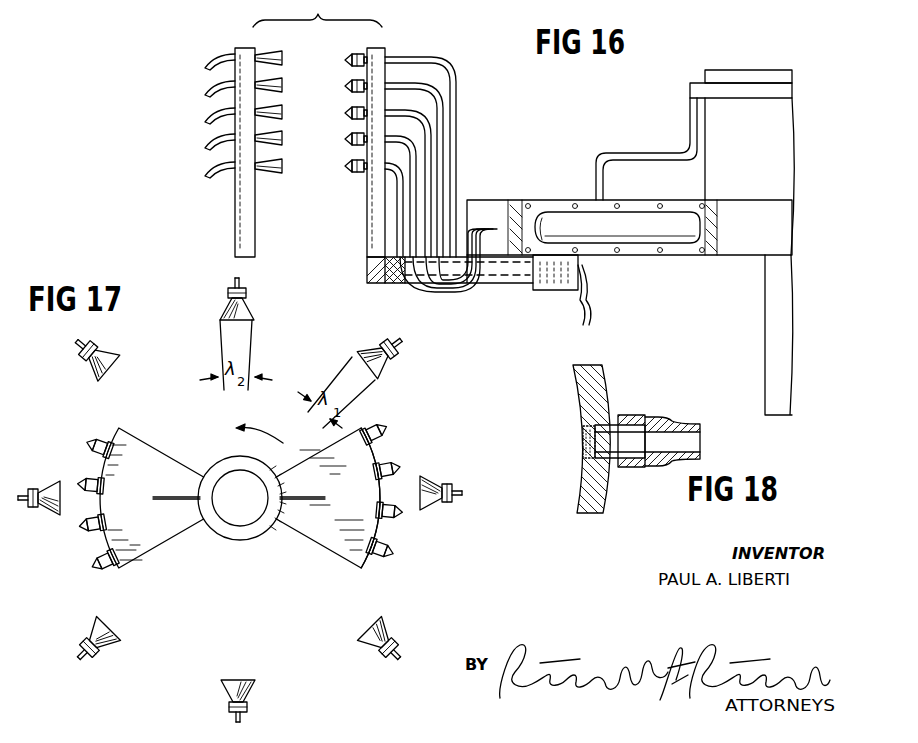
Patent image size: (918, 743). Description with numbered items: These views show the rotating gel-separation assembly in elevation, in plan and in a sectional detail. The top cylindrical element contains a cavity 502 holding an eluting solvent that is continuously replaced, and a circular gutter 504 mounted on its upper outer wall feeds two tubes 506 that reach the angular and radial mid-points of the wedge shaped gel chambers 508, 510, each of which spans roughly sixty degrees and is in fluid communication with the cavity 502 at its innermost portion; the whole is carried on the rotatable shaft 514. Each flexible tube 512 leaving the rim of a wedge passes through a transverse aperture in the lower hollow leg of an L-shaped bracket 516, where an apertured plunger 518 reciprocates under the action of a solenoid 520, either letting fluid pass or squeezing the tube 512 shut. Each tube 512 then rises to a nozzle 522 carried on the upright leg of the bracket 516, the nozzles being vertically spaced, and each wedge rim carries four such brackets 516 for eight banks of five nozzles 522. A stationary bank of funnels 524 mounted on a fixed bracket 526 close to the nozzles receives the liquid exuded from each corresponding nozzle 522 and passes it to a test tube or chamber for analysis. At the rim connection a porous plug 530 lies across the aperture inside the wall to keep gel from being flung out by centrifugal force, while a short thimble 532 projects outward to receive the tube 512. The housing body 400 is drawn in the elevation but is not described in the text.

In FIG. 16, the housing / manifold body 400 is at (647, 231).
In FIG. 16, the cavity 502 is at (763, 66).
In FIG. 17, the cavity 502 is at (253, 521).
In FIG. 16, the circular gutter 504 is at (700, 93).
In FIG. 16, the tubes 506 is at (650, 156).
In FIG. 17, the wedge shaped gel chamber 508 is at (362, 491).
In FIG. 18, the wedge shaped gel chamber 508 is at (595, 438).
In FIG. 17, the wedge shaped gel chamber 510 is at (147, 527).
In FIG. 18, the wedge shaped gel chamber 510 is at (598, 383).
In FIG. 16, the flexible tube 512 is at (456, 108).
In FIG. 18, the flexible tube 512 is at (697, 462).
In FIG. 16, the rotatable shaft 514 is at (767, 312).
In FIG. 16, the L-shaped bracket 516 is at (380, 238).
In FIG. 17, the L-shaped bracket 516 is at (378, 444).
In FIG. 16, the plunger 518 is at (387, 265).
In FIG. 16, the solenoid 520 is at (563, 287).
In FIG. 16, the nozzle 522 is at (358, 52).
In FIG. 17, the nozzle 522 is at (389, 428).
In FIG. 16, the bank of funnels 524 is at (286, 116).
In FIG. 17, the bank of funnels 524 is at (228, 309).
In FIG. 16, the bracket 526 is at (243, 232).
In FIG. 17, the bracket 526 is at (393, 355).
In FIG. 18, the porous plug 530 is at (583, 441).
In FIG. 18, the thimble 532 is at (618, 418).